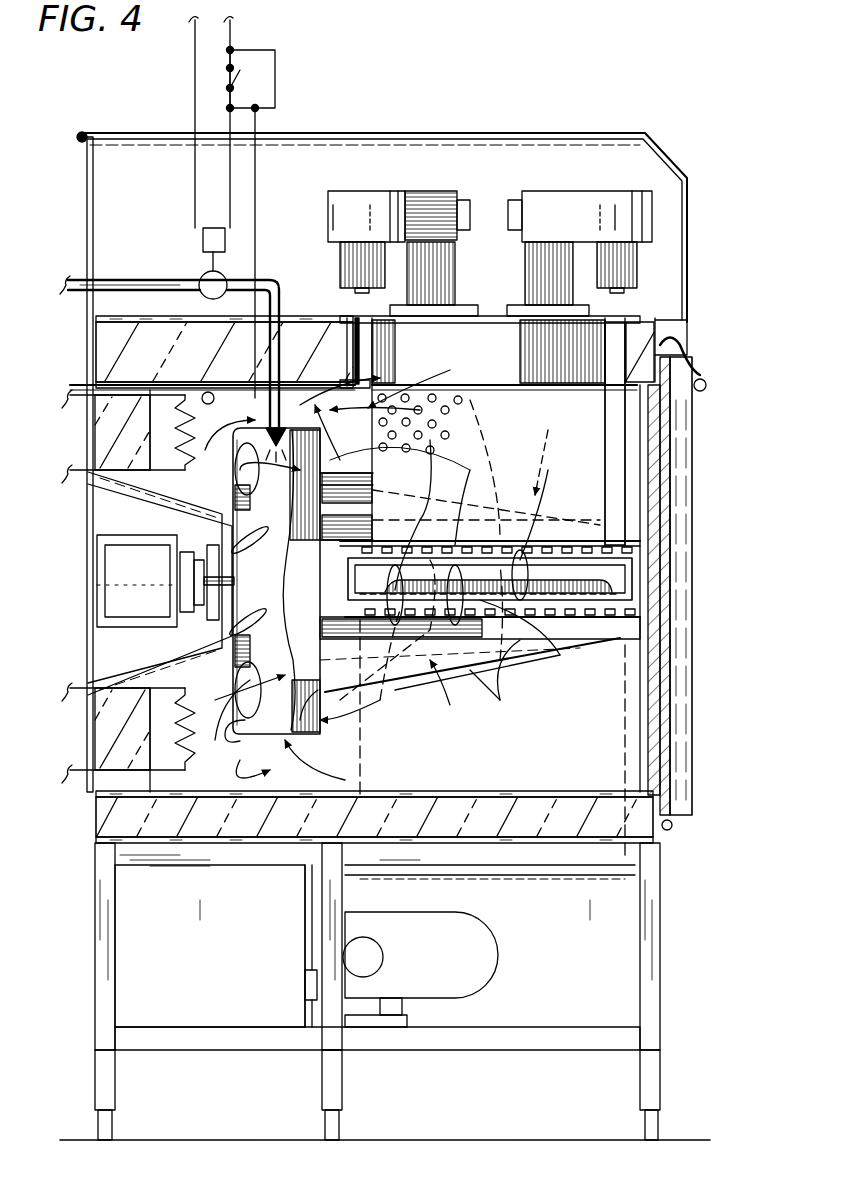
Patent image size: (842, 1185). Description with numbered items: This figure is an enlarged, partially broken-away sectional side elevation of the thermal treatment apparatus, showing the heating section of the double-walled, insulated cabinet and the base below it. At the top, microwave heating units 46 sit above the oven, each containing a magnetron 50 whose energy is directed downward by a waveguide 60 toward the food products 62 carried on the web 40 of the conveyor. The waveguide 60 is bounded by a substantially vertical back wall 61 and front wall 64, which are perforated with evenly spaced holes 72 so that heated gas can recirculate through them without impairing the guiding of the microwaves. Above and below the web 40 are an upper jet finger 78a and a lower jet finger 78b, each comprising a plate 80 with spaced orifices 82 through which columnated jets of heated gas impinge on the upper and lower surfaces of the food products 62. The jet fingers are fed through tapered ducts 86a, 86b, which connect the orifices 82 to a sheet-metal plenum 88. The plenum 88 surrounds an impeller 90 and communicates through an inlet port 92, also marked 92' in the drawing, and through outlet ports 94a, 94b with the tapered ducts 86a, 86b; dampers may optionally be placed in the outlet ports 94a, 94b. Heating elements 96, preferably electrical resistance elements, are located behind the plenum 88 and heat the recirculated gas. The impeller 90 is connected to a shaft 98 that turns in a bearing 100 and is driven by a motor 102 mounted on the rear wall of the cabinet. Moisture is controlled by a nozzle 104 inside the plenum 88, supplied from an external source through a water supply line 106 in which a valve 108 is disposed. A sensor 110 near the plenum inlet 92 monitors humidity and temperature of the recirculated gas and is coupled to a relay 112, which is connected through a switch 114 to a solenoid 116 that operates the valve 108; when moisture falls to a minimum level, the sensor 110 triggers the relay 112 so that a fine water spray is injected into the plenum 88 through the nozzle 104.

The web 40 is at (615, 590).
The microwave heating units 46 is at (394, 177).
The magnetron 50 is at (440, 190).
The waveguides 60 is at (645, 445).
The back wall 61 is at (340, 372).
The food products 62 is at (400, 667).
The front wall 64 is at (605, 470).
The holes 72 is at (405, 390).
The upper jet finger 78a is at (544, 451).
The lower jet finger 78b is at (470, 691).
The plate 80 is at (553, 555).
The orifices 82 is at (500, 655).
The upper tapered duct 86a is at (527, 478).
The lower tapered duct 86b is at (540, 640).
The plenum 88 is at (276, 581).
The impeller 90 is at (234, 565).
The inlet port 92 is at (243, 603).
The fan blade 92' is at (259, 643).
The upper outlet port 94a is at (315, 500).
The lower outlet port 94b is at (322, 710).
The heating elements 96 is at (152, 440).
The shaft 98 is at (235, 582).
The bearing 100 is at (200, 612).
The motor 102 is at (137, 581).
The nozzle 104 is at (278, 422).
The water supply line 106 is at (110, 280).
The valve 108 is at (203, 272).
The sensor 110 is at (208, 392).
The relay 112 is at (275, 78).
The switch 114 is at (225, 80).
The solenoid 116 is at (203, 238).